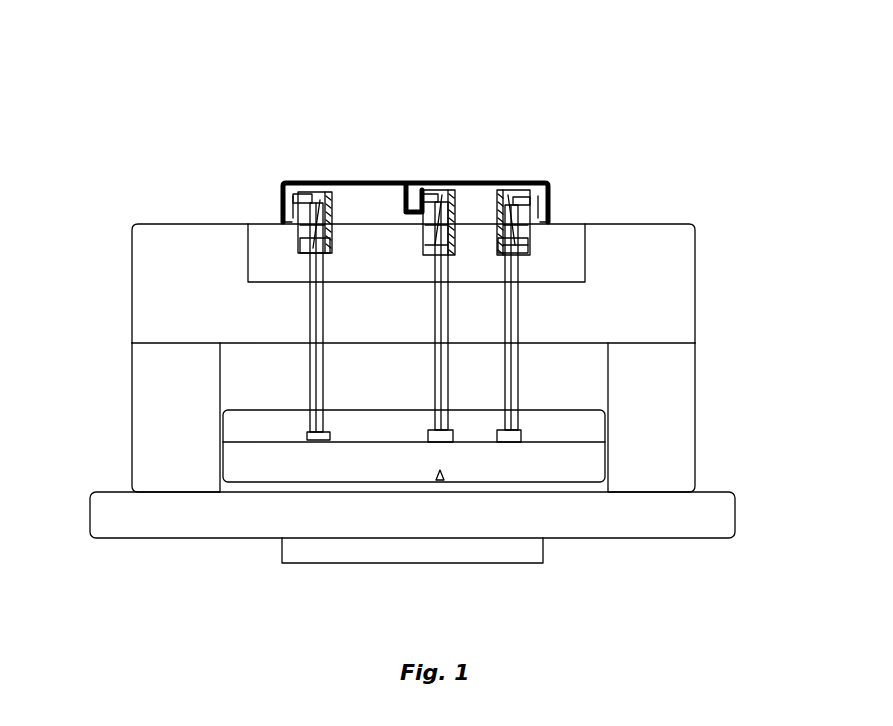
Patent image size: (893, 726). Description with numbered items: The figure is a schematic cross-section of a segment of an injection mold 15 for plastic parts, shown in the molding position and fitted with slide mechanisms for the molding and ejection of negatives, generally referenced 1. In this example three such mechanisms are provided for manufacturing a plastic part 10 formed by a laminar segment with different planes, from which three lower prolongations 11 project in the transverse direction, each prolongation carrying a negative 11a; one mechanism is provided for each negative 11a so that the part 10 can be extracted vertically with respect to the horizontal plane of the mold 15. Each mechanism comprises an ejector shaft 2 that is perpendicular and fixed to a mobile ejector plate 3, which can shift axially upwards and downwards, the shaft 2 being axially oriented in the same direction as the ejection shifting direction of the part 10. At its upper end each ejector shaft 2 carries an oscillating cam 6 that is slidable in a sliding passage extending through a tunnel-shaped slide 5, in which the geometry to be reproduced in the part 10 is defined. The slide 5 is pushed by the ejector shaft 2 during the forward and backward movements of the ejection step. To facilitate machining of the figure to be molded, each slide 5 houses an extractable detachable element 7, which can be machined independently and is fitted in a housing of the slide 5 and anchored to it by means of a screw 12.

The slide mechanism for the molding and ejection of negatives 1 is at (193, 203).
The ejector shaft 2 is at (316, 372).
The mobile ejector plate 3 is at (572, 463).
The slide 5 is at (298, 222).
The cam 6 is at (300, 241).
The detachable element 7 is at (282, 188).
The part to be obtained 10 is at (372, 182).
The lower prolongations 11 is at (280, 208).
The negatives 11a is at (293, 195).
The screw 12 is at (316, 190).
The mold 15 is at (567, 230).